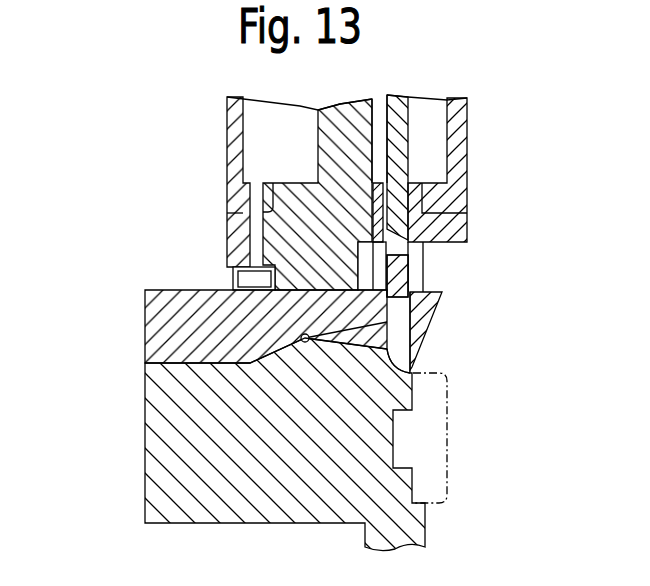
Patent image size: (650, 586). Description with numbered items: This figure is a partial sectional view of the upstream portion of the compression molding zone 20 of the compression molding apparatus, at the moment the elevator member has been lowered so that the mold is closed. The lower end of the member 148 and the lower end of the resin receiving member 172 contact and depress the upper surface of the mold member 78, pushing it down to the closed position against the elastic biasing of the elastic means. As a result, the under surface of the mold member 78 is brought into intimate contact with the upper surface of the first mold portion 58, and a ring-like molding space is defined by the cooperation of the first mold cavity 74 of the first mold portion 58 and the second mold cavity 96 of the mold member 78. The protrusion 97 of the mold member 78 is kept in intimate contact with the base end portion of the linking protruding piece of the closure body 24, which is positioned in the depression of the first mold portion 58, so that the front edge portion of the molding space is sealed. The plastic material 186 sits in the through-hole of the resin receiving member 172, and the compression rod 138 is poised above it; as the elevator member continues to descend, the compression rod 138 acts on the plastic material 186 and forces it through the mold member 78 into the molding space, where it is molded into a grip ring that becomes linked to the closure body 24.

The compression molding zone 20 is at (122, 248).
The compression rod 138 is at (412, 152).
The member 148 is at (227, 233).
The resin receiving member 172 is at (428, 258).
The plastic material 186 is at (405, 278).
The mold member 78 is at (145, 325).
The first mold portion 58 is at (146, 422).
The first mold cavity 74 is at (304, 344).
The second mold cavity 96 is at (387, 322).
The protrusion 97 is at (412, 366).
The closure body 24 is at (447, 453).